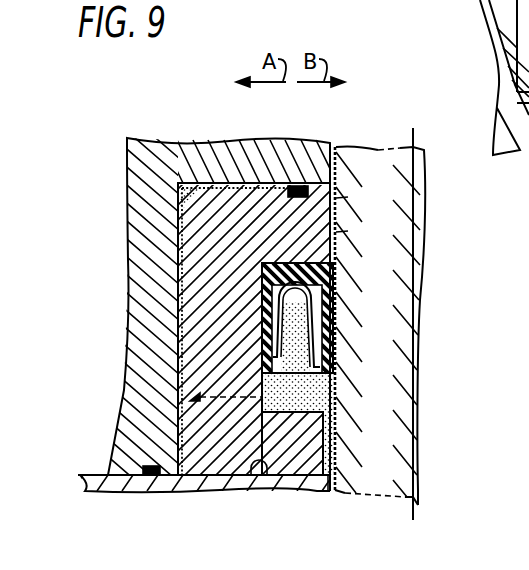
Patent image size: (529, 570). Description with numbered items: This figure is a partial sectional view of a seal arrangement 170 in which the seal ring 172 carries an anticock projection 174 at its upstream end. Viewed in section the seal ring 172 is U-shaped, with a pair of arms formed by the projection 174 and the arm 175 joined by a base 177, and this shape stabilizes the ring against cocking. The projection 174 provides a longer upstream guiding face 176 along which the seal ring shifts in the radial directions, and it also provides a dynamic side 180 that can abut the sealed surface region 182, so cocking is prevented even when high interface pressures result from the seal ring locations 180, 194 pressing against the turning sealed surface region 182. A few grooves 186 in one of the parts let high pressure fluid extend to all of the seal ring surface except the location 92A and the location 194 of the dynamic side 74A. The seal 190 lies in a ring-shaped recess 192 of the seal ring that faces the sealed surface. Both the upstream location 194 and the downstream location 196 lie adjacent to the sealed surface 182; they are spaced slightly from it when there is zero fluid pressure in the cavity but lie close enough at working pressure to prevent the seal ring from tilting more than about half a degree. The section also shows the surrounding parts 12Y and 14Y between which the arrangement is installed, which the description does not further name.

The seal arrangement 170 is at (176, 131).
The seal ring 172 is at (247, 143).
The location 92A is at (312, 182).
The arm 175 is at (350, 162).
The upstream location 194 is at (348, 197).
The dynamic side 74A is at (348, 231).
The seal 190 is at (264, 266).
The ring-shaped recess 192 is at (283, 291).
The base 177 is at (192, 333).
The grooves 186 is at (178, 412).
The dynamic side 180 is at (333, 417).
The anticock projection 174 is at (336, 440).
The downstream location 196 is at (333, 466).
The bottom plate 12Y is at (118, 493).
The upstream guiding face 176 is at (251, 492).
The sealed surface region 182 is at (327, 493).
The wall line 14Y is at (414, 498).